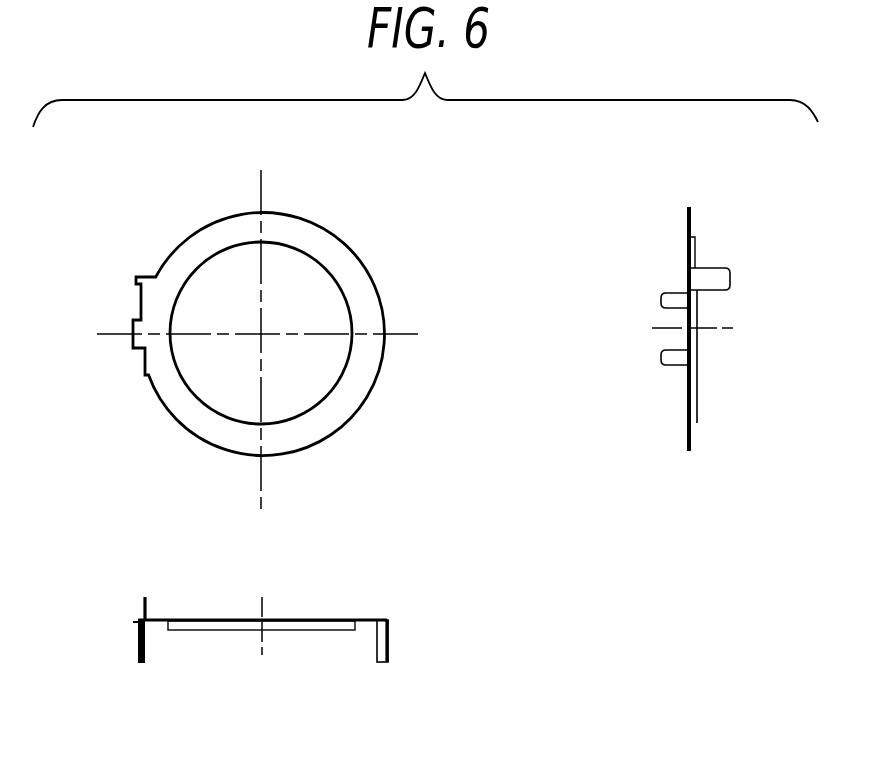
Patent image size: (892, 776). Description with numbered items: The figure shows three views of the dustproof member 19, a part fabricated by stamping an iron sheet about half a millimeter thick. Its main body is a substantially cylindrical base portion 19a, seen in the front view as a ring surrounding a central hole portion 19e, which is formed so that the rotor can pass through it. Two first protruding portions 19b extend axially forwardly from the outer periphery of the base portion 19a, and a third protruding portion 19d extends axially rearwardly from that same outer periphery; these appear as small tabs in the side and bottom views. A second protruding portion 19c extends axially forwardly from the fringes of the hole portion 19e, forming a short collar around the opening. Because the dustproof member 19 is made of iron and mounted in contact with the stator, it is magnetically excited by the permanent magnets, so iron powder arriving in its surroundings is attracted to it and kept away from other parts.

The dustproof member 19 is at (400, 229).
The base portion 19a is at (318, 428).
The first protruding portions 19b is at (731, 279).
The second protruding portion 19c is at (697, 423).
The third protruding portion 19d is at (660, 299).
The hole portion 19e is at (332, 365).